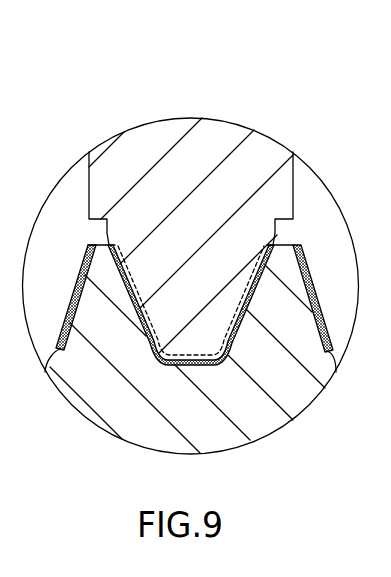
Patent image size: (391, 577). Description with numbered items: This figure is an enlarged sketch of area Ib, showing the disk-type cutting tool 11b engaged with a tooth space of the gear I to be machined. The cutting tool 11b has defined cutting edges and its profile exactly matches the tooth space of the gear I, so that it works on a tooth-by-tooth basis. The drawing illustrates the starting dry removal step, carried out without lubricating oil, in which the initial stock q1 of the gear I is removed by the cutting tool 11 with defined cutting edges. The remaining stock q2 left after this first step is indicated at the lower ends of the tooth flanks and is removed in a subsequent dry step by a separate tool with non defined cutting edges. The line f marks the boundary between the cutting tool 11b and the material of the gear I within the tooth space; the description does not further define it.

The area Ib is at (191, 117).
The cutting tool 11 is at (150, 133).
The cutting tool of disk-type shape 11b is at (191, 235).
The boundary surface (dashed line) f is at (135, 279).
The initial stock q1 is at (345, 193).
The remaining stock q2 is at (67, 338).
The gear I is at (197, 423).